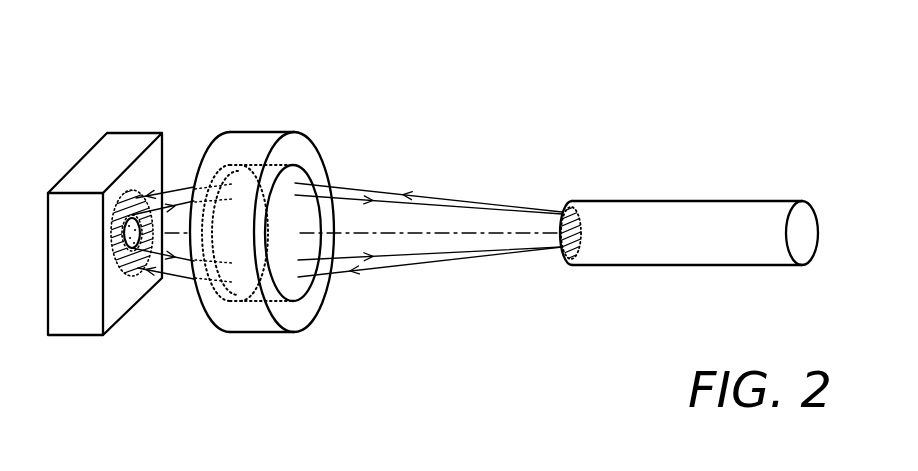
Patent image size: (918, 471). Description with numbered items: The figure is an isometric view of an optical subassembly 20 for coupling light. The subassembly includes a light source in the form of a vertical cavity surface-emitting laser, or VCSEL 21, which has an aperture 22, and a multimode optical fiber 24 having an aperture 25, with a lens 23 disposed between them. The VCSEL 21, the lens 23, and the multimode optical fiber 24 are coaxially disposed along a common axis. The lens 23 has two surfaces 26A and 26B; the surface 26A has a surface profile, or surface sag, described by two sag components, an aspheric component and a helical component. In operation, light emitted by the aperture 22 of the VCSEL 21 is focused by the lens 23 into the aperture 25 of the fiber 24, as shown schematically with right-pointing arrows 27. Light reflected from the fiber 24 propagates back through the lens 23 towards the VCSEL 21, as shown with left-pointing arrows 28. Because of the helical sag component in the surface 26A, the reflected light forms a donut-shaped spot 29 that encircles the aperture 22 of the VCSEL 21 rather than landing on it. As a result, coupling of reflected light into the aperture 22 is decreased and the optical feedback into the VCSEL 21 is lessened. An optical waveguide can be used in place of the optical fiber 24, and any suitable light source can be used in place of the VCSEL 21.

The optical subassembly 20 is at (455, 81).
The vertical cavity surface-emitting laser (VCSEL) 21 is at (78, 162).
The aperture of the VCSEL 22 is at (124, 240).
The lens 23 is at (255, 133).
The multimode optical fiber 24 is at (662, 202).
The aperture of the fiber 25 is at (558, 248).
The lens surface 26A is at (223, 180).
The lens surface 26B is at (297, 172).
The right-pointing arrows 27 is at (198, 263).
The left-pointing arrows 28 is at (334, 272).
The donut-shaped spot 29 is at (118, 268).